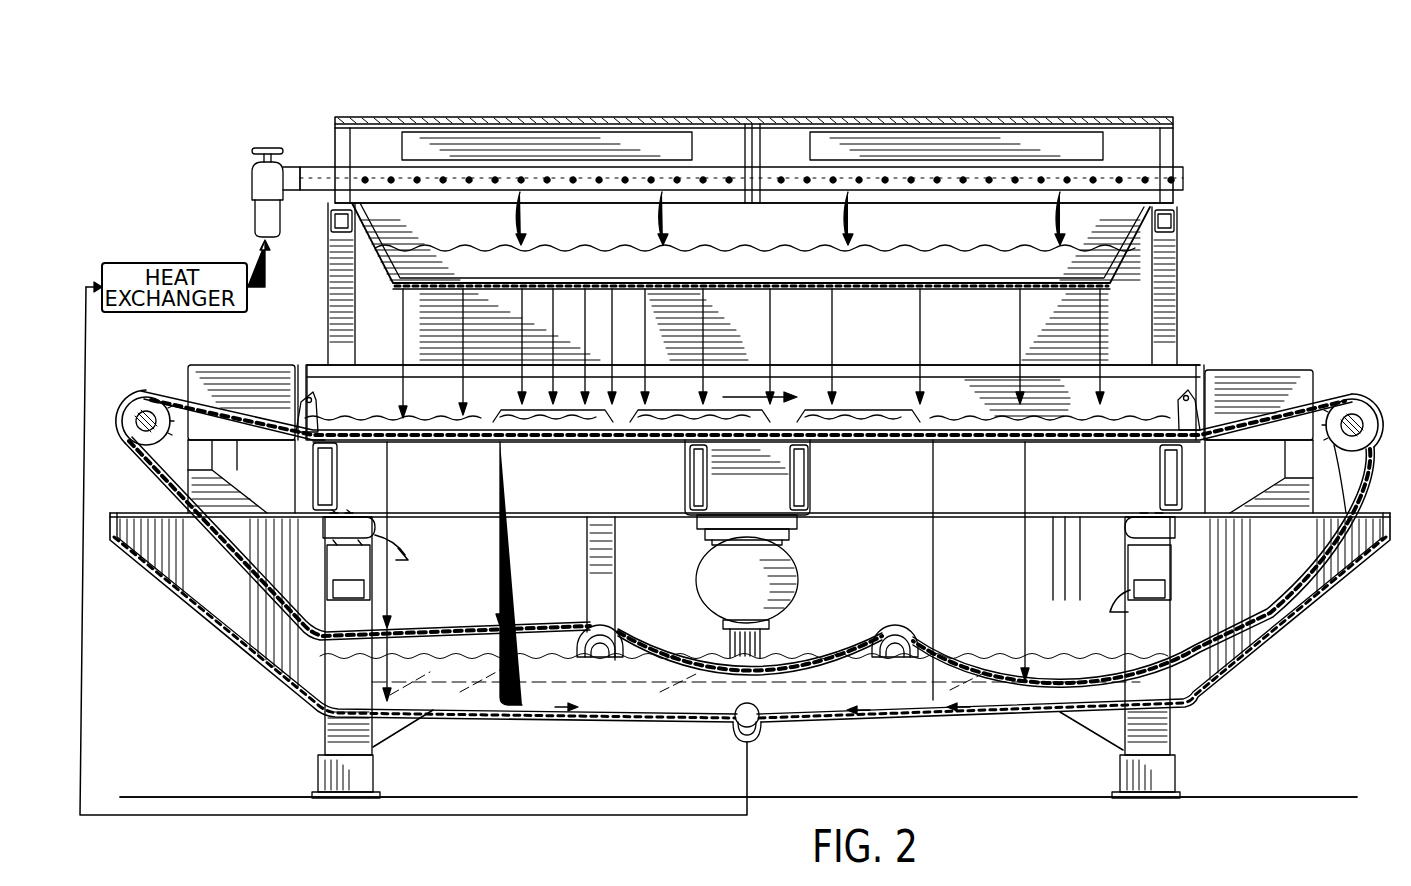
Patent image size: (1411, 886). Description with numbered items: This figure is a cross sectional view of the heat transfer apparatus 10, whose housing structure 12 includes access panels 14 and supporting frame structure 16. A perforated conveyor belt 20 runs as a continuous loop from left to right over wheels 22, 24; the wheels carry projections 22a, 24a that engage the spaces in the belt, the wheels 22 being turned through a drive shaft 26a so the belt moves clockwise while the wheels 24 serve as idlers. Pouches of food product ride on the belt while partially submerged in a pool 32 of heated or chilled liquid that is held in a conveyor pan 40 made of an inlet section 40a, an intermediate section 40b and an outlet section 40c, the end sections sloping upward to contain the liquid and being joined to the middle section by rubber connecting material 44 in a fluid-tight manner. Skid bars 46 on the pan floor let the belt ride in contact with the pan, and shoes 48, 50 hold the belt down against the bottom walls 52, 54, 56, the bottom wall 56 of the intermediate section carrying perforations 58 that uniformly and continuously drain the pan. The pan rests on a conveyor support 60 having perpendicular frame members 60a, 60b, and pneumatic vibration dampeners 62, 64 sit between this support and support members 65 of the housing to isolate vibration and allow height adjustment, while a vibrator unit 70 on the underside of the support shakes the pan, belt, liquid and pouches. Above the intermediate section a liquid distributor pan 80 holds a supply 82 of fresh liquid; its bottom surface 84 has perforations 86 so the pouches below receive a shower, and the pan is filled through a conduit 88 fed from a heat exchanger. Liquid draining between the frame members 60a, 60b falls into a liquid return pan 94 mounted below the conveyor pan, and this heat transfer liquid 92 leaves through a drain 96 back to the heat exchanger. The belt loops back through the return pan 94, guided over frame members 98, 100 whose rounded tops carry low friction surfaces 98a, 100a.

The apparatus 10 is at (1272, 168).
The housing structure 12 is at (1192, 276).
The access panels 14 is at (560, 140).
The frame structure 16 is at (325, 740).
The perforated conveyor belt 20 is at (1357, 388).
The wheels 22 is at (1362, 408).
The projections 22a is at (1322, 506).
The wheels 24 is at (152, 390).
The projections 24a is at (150, 470).
The drive shaft 26a is at (1348, 476).
The pool of heat transfer liquid 32 is at (955, 395).
The conveyor pan 40 is at (1236, 356).
The inlet section 40a is at (262, 366).
The intermediate section 40b is at (375, 365).
The outlet section 40c is at (1256, 370).
The rubber connecting material 44 is at (300, 365).
The skid bars 46 is at (460, 442).
The shoe 48 is at (296, 402).
The shoe 50 is at (1177, 412).
The bottom wall 52 is at (240, 455).
The bottom wall 54 is at (1255, 440).
The bottom wall 56 is at (852, 442).
The perforations 58 is at (395, 442).
The conveyor support 60 is at (541, 522).
The frame member 60a is at (965, 505).
The frame member 60b is at (685, 488).
The pneumatic vibration dampener 62 is at (322, 528).
The pneumatic vibration dampener 64 is at (1176, 540).
The support members 65 is at (370, 568).
The vibrator unit 70 is at (688, 588).
The liquid distributor pan 80 is at (372, 266).
The supply of liquid 82 is at (610, 243).
The bottom surface 84 is at (812, 291).
The perforations 86 is at (592, 288).
The conduit 88 is at (312, 162).
The heat transfer liquid 92 is at (777, 662).
The liquid return pan 94 is at (1295, 625).
The drain 96 is at (760, 740).
The frame member 98 is at (600, 660).
The low friction pad 98a is at (585, 632).
The frame member 100 is at (888, 660).
The low friction pad 100a is at (934, 630).